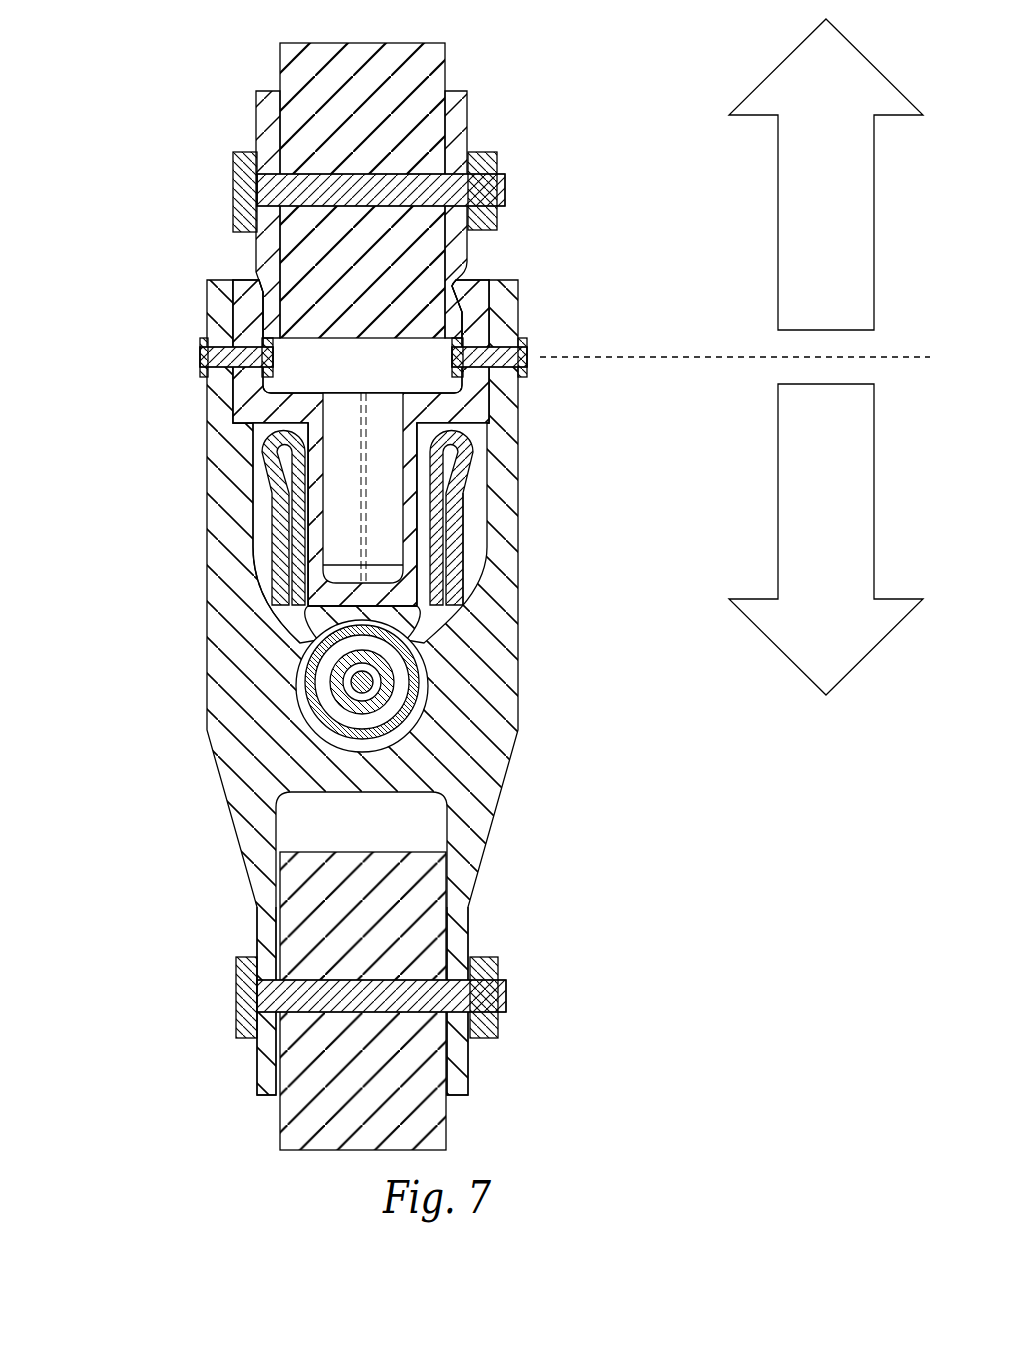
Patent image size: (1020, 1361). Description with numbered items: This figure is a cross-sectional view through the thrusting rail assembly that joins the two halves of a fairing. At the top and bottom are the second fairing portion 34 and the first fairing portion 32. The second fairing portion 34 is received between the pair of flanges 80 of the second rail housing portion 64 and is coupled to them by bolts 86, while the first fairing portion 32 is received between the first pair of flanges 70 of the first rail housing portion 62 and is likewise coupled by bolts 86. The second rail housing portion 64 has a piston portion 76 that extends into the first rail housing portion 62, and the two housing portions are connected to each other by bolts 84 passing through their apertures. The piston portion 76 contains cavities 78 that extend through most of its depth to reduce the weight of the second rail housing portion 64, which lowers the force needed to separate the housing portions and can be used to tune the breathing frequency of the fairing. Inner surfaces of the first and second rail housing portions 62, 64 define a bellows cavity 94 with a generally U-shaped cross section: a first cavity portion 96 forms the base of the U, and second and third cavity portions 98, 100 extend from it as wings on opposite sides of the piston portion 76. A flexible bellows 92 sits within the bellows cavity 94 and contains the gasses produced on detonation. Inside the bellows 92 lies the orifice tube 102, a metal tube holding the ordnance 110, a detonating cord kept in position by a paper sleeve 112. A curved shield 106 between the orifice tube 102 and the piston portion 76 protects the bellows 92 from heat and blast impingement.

The first fairing portion 32 is at (269, 1130).
The second fairing portion 34 is at (269, 58).
The first rail housing portion 62 is at (196, 731).
The second rail housing portion 64 is at (238, 289).
The first pair of flanges 70 is at (270, 943).
The piston portion 76 is at (300, 537).
The cavities 78 is at (343, 490).
The pair of flanges 80 is at (262, 122).
The bolts 84 is at (205, 350).
The bolts 86 is at (470, 192).
The bellows 92 is at (473, 473).
The bellows cavity 94 is at (243, 553).
The first cavity portion 96 is at (297, 643).
The second cavity portion 98 is at (313, 534).
The third cavity portion 100 is at (467, 547).
The orifice tube 102 is at (400, 680).
The shield 106 is at (432, 653).
The ordnance 110 is at (400, 722).
The sleeve 112 is at (384, 684).